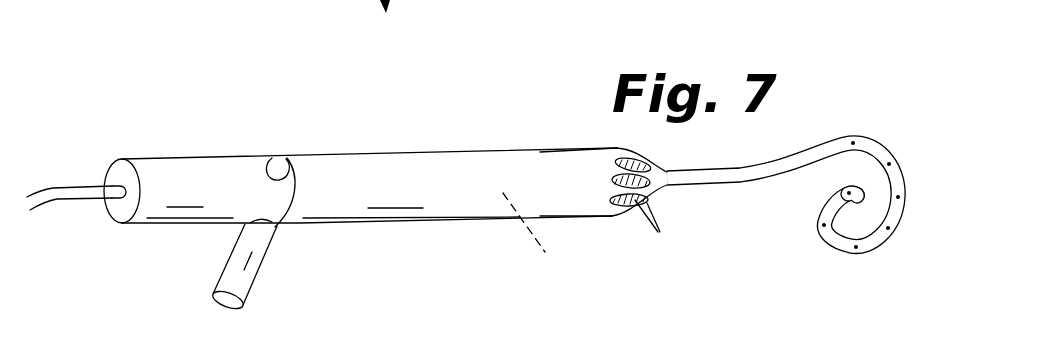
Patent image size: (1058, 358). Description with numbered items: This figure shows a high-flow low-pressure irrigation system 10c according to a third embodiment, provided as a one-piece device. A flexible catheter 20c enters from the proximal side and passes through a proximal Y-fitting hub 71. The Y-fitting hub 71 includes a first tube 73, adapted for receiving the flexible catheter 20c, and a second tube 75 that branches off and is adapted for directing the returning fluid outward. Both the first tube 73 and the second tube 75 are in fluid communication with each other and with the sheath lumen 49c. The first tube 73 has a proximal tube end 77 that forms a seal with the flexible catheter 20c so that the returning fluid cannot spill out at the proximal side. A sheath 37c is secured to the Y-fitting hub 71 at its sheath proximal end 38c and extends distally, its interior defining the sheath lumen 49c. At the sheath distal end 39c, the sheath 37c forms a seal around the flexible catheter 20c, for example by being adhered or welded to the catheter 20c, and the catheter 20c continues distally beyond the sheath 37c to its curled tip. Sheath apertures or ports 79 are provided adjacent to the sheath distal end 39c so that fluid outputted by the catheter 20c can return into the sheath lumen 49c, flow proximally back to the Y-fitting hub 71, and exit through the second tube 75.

The irrigation system 10c is at (237, 85).
The flexible catheter 20c is at (77, 180).
The proximal Y-fitting hub 71 is at (182, 172).
The first tube 73 is at (178, 228).
The second tube 75 is at (255, 258).
The proximal tube end 77 is at (113, 214).
The sheath proximal end 38c is at (268, 158).
The sheath 37c is at (573, 165).
The sheath distal end 39c is at (663, 162).
The sheath lumen 49c is at (541, 240).
The sheath apertures or ports 79 is at (658, 232).